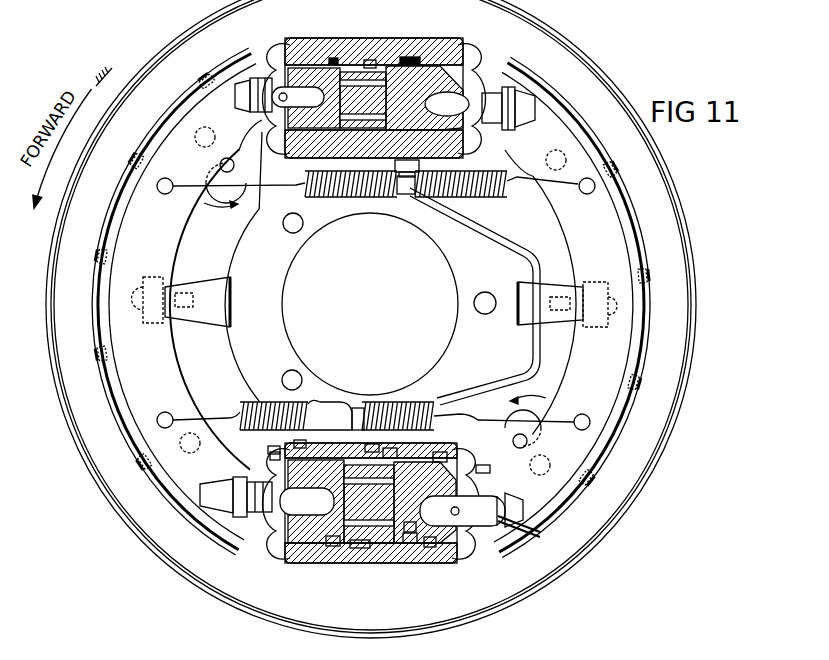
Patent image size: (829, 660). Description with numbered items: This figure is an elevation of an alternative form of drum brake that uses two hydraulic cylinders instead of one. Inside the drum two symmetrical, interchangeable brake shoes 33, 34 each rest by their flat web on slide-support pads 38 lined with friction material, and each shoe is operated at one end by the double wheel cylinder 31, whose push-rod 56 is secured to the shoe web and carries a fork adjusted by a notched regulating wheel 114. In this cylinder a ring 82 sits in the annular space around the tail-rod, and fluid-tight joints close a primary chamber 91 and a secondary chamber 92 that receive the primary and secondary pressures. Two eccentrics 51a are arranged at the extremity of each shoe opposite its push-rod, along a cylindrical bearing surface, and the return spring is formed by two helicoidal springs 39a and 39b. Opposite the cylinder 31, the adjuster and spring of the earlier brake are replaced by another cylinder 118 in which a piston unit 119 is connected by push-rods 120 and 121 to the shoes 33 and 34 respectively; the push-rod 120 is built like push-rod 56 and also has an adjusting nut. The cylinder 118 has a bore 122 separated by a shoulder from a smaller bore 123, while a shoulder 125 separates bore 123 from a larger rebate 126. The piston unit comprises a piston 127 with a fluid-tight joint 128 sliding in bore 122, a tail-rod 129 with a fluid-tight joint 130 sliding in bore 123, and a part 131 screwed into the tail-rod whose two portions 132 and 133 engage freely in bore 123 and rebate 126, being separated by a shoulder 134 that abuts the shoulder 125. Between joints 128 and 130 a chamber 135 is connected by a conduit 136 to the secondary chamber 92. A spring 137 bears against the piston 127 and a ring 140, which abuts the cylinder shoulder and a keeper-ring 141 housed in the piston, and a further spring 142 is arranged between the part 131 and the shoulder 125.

The double wheel cylinder 31 is at (352, 38).
The brake shoe 33 is at (107, 422).
The brake shoe 34 is at (638, 420).
The pads 38 is at (200, 130).
The helicoidal spring 39a is at (359, 201).
The helicoidal spring 39b is at (264, 401).
The eccentric 51a is at (241, 198).
The push-rod 56 is at (458, 113).
The ring 82 is at (372, 60).
The primary chamber 91 is at (334, 58).
The secondary chamber 92 is at (410, 57).
The notched regulating wheel 114 is at (489, 86).
The cylinder 118 is at (375, 565).
The piston unit 119 is at (276, 540).
The push-rod 120 is at (312, 501).
The push-rod 121 is at (532, 503).
The bore 122 is at (293, 548).
The bore 123 is at (360, 552).
The shoulder 125 is at (410, 544).
The rebate 126 is at (470, 556).
The piston 127 is at (270, 457).
The fluid-tight joint 128 is at (268, 452).
The tail-rod 129 is at (392, 448).
The fluid-tight joint 130 is at (441, 452).
The part 131 is at (500, 537).
The portion 132 is at (410, 533).
The portion 133 is at (484, 471).
The shoulder 134 is at (486, 492).
The chamber 135 is at (318, 428).
The conduit 136 is at (483, 315).
The spring 137 is at (300, 440).
The ring 140 is at (333, 547).
The keeper-ring 141 is at (372, 445).
The spring 142 is at (431, 548).